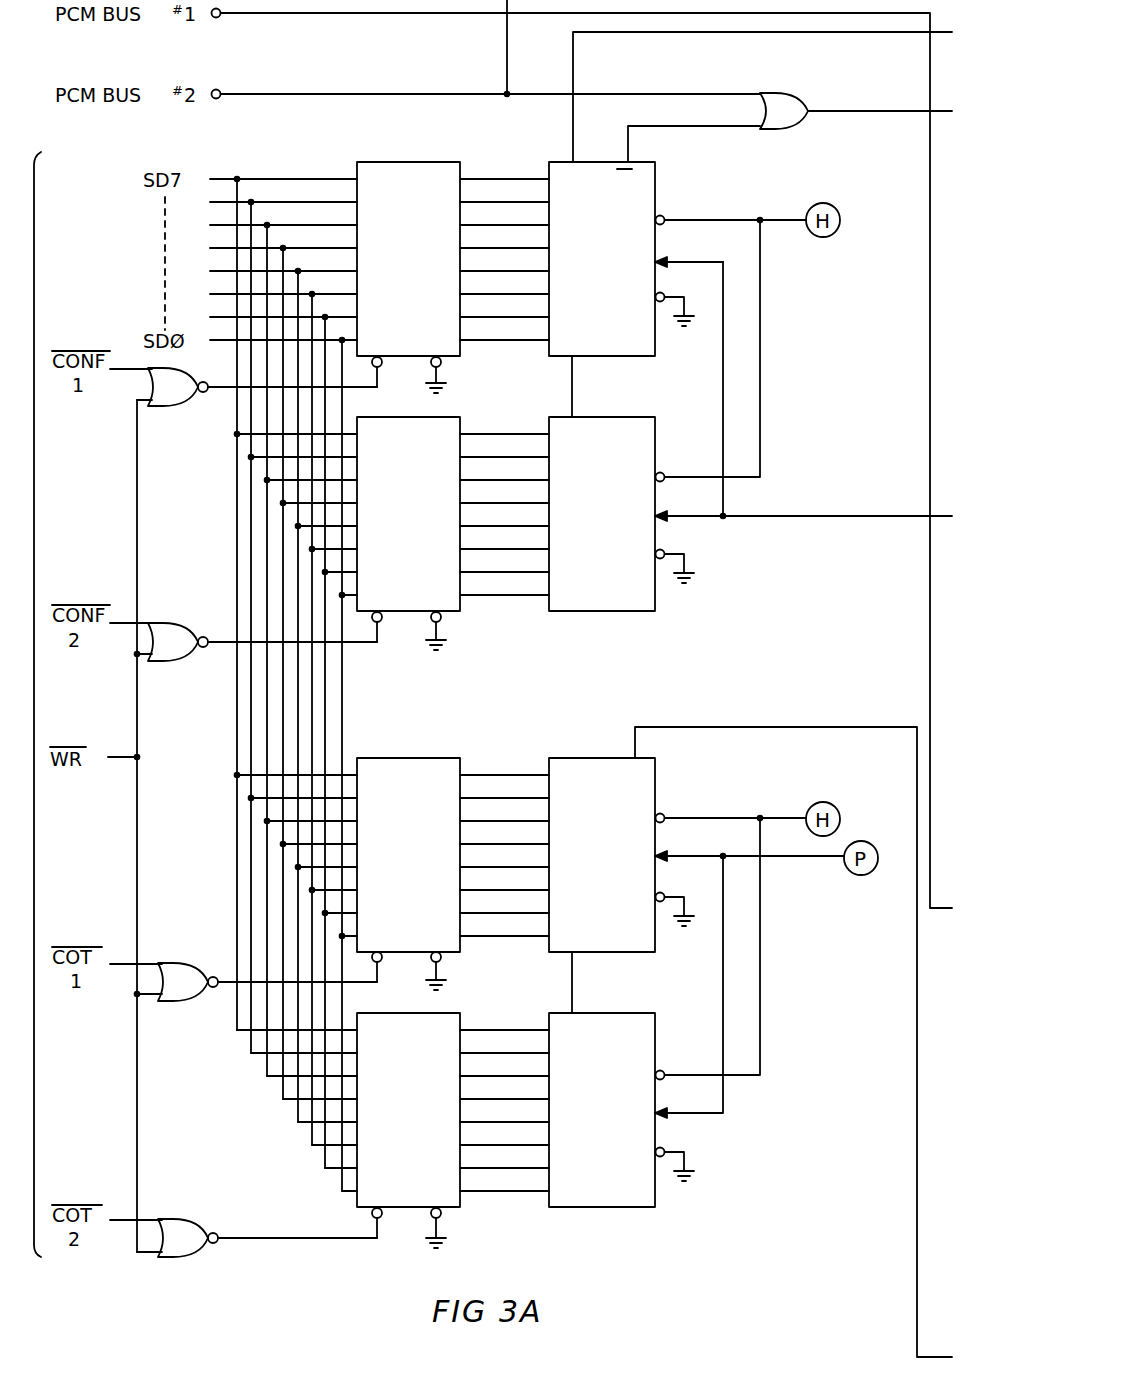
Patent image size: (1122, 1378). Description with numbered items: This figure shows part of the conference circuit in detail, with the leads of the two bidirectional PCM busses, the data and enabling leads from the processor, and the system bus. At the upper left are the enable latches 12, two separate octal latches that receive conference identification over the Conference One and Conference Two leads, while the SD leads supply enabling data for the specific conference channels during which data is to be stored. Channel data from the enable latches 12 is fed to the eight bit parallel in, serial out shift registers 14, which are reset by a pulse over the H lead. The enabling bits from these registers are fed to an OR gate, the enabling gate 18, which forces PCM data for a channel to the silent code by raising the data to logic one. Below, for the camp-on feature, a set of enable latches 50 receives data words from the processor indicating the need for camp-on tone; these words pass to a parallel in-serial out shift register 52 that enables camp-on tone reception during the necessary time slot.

The enable latches 12 is at (423, 162).
The shift registers 14 is at (657, 187).
The enabling gate 18 is at (805, 104).
The enable latches 50 is at (410, 758).
The parallel in-serial out shift register 52 is at (597, 758).